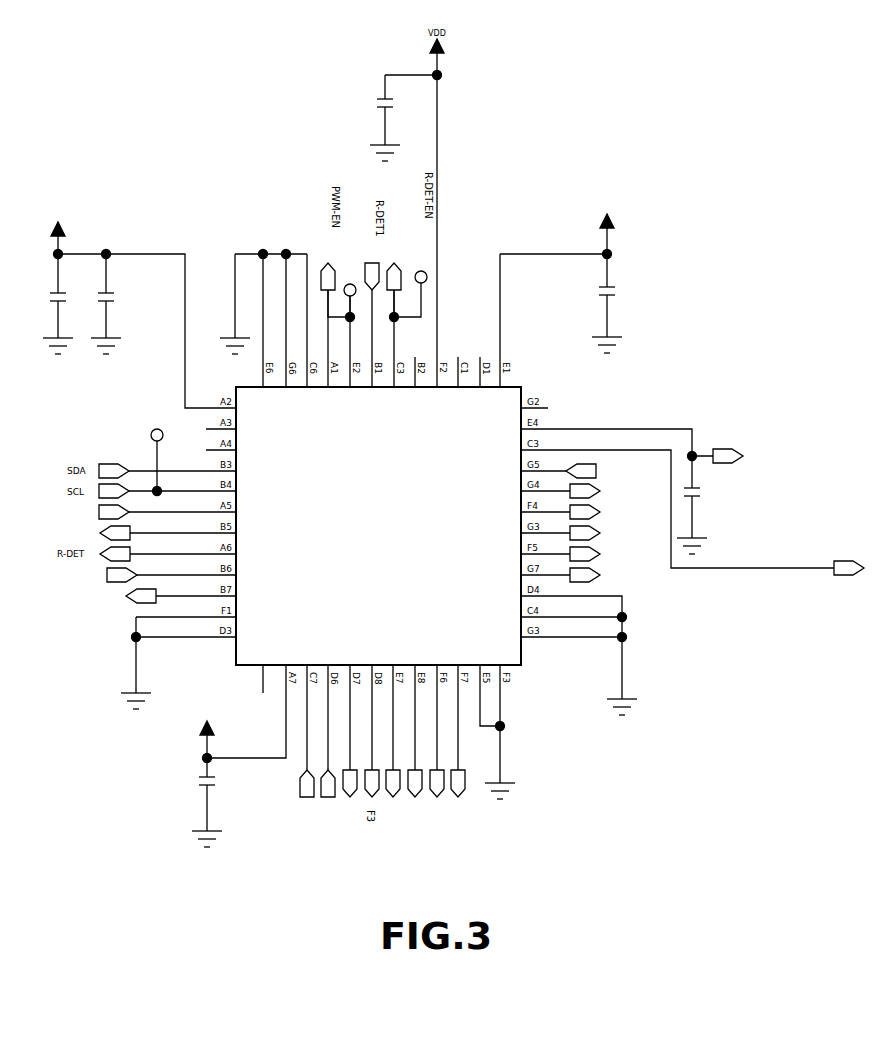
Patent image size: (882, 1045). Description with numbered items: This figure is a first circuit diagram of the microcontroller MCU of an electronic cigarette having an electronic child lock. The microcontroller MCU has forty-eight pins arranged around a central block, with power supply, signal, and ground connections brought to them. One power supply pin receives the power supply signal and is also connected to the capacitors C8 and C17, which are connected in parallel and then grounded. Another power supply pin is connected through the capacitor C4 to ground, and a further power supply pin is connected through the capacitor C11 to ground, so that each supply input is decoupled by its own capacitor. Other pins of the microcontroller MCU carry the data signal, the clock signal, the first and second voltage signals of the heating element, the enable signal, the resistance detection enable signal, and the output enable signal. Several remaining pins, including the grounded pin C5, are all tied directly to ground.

The microcontroller MCU is at (378, 526).
The capacitor C4 is at (216, 778).
The pin C5 is at (710, 501).
The capacitor C8 is at (49, 281).
The capacitor C11 is at (573, 278).
The capacitor C17 is at (118, 302).